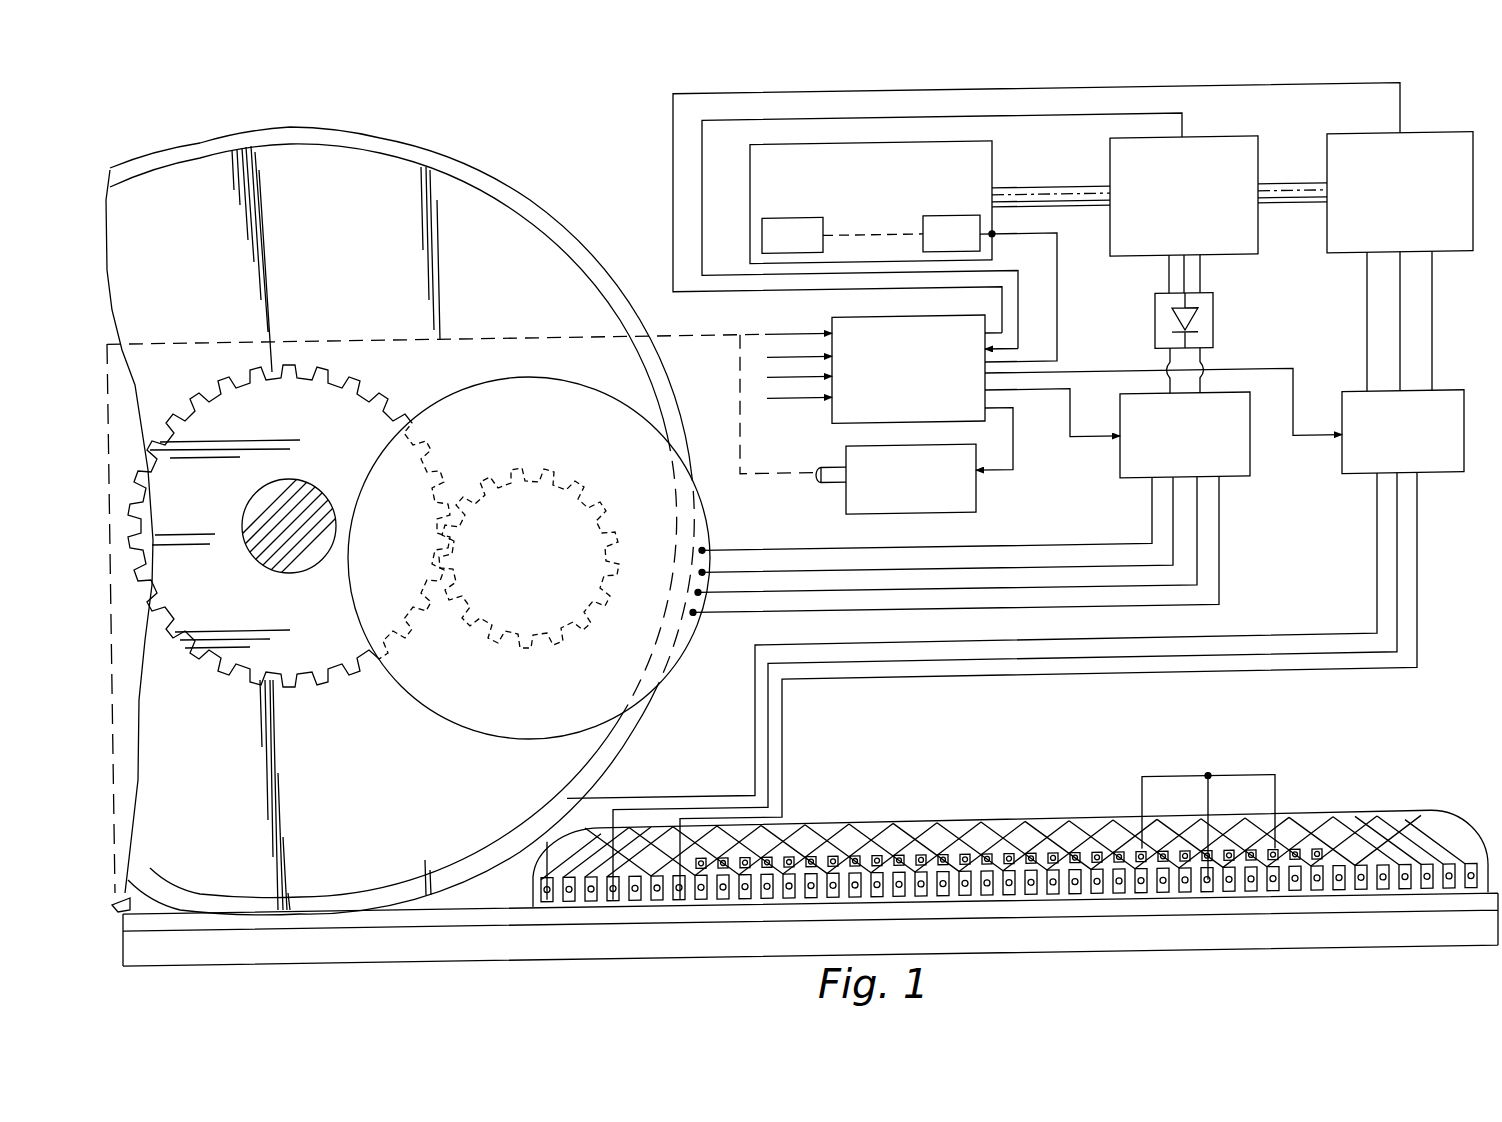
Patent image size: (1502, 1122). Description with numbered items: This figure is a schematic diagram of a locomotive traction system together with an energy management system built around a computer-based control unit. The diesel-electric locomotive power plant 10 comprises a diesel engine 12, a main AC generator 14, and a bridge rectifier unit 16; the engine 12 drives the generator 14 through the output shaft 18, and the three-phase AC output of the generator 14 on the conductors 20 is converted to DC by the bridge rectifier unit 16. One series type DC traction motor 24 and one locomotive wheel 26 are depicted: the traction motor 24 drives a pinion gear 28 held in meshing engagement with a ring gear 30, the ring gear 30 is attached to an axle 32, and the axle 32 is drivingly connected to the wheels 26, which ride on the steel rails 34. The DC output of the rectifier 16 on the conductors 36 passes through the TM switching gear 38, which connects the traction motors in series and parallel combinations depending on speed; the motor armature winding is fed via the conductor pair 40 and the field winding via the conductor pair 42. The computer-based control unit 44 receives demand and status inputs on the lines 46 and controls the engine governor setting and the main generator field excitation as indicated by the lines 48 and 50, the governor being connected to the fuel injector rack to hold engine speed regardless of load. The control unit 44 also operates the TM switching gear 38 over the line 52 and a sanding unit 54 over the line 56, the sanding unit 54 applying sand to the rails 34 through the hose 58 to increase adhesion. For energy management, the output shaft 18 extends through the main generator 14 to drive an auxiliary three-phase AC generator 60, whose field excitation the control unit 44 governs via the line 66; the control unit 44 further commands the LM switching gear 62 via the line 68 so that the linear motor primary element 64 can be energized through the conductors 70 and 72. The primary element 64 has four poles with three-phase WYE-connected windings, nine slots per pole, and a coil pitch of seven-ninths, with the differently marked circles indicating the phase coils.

The diesel-electric locomotive power plant 10 is at (1003, 80).
The diesel engine 12 is at (988, 151).
The main AC generator 14 is at (1242, 151).
The bridge rectifier unit 16 is at (1214, 327).
The output shaft 18 is at (1080, 186).
The conductors 20 is at (1200, 283).
The traction motor 24 is at (560, 722).
The locomotive wheels 26 is at (510, 200).
The pinion gear 28 is at (500, 640).
The ring gear 30 is at (310, 660).
The axle 32 is at (289, 560).
The steel rails 34 is at (610, 938).
The conductors 36 is at (1206, 376).
The TM switching gear 38 is at (1250, 481).
The conductor pair 40 is at (1102, 546).
The conductor pair 42 is at (1066, 606).
The computer-based control unit 44 is at (840, 312).
The input lines 46 is at (777, 328).
The governor control line 48 is at (1060, 285).
The main generator field excitation line 50 is at (1025, 290).
The TM switching gear control line 52 is at (1052, 391).
The sanding unit 54 is at (890, 511).
The sanding unit control line 56 is at (1017, 449).
The hose 58 is at (822, 478).
The auxiliary three-phase AC generator 60 is at (1333, 252).
The LM switching gear 62 is at (1352, 478).
The linear motor primary element 64 is at (1335, 815).
The auxiliary generator field control line 66 is at (673, 149).
The LM switching gear control line 68 is at (1106, 371).
The conductors 70 is at (1432, 315).
The conductors 72 is at (1377, 591).